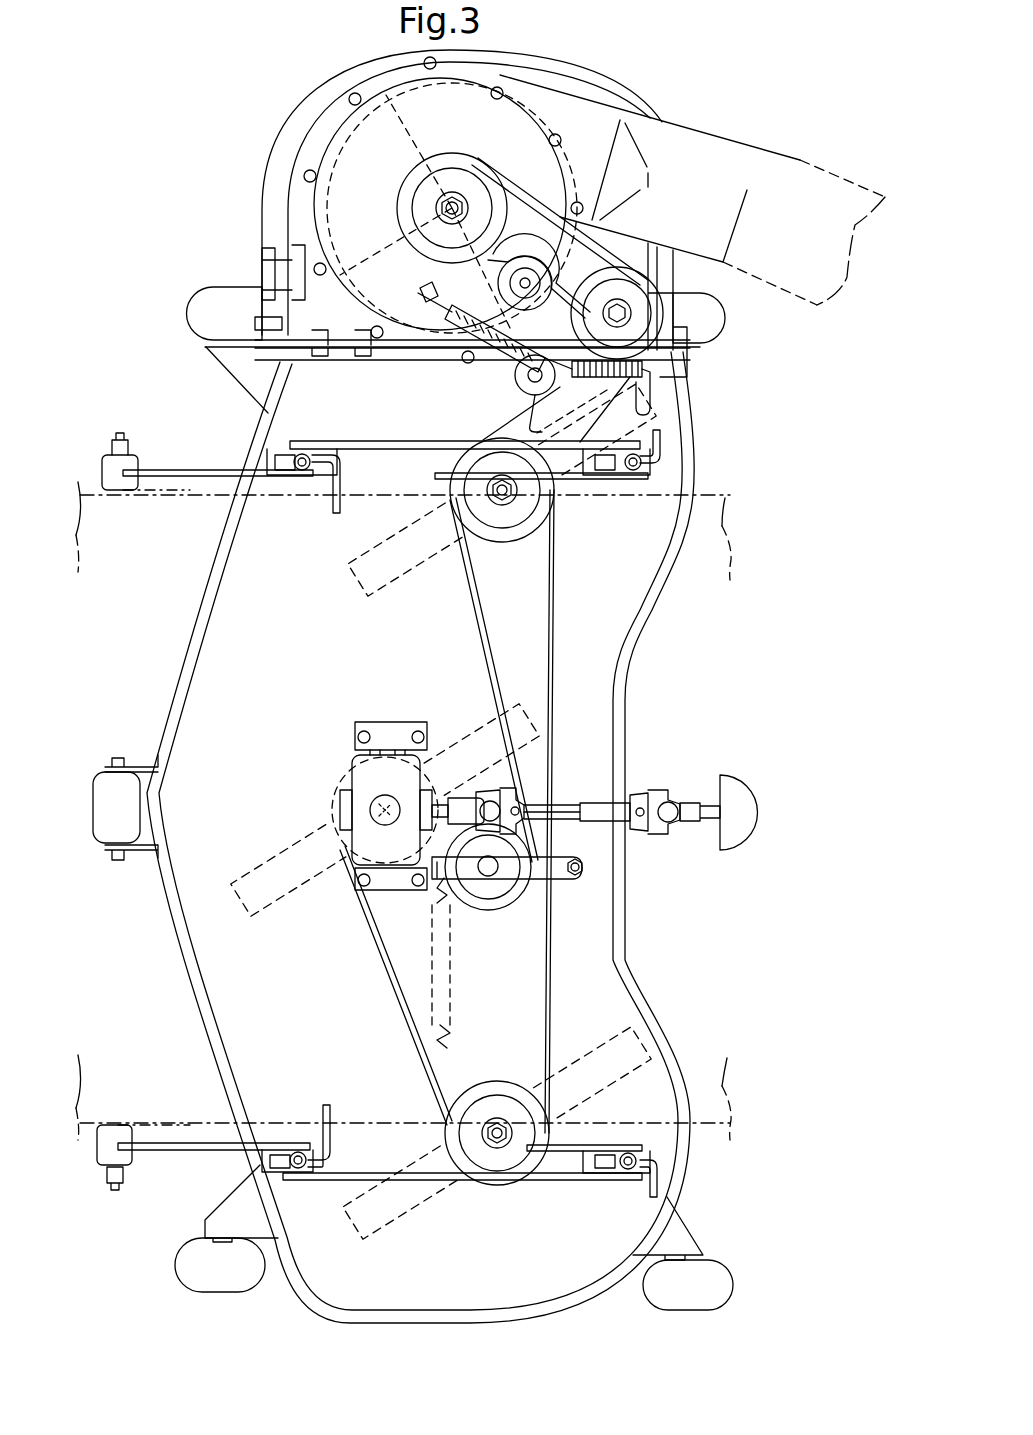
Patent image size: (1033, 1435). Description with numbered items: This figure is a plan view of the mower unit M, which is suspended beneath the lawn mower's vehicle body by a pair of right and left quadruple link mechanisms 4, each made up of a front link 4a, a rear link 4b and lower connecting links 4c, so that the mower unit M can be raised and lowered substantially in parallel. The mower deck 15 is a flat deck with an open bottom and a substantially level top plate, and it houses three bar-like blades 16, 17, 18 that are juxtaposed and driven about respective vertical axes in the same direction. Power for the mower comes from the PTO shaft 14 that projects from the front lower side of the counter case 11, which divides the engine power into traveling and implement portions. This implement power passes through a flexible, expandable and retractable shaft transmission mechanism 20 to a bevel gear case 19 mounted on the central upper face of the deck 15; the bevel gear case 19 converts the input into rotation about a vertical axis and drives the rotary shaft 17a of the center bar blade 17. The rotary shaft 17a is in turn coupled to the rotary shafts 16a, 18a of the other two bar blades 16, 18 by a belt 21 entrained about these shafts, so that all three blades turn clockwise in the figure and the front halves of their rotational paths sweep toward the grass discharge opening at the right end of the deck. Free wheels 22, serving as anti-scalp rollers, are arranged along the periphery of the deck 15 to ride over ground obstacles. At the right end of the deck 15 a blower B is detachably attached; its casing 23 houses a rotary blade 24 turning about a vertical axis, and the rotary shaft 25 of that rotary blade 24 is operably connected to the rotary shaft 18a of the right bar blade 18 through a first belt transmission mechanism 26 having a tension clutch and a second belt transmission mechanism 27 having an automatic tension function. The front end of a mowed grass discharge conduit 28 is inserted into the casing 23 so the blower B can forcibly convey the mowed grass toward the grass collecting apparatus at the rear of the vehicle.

The mower unit M is at (182, 940).
The blower B is at (280, 163).
The quadruple link mechanism 4 is at (355, 438).
The front link 4a is at (240, 468).
The rear link 4b is at (580, 480).
The lower connecting link 4c is at (375, 457).
The counter case 11 is at (738, 822).
The PTO shaft 14 is at (714, 818).
The mower deck 15 is at (196, 667).
The bar blade 16 is at (430, 1215).
The rotary shaft 16a is at (499, 1125).
The center bar blade 17 is at (283, 905).
The rotary shaft 17a is at (330, 805).
The right bar blade 18 is at (362, 583).
The rotary shaft 18a is at (502, 500).
The bevel gear case 19 is at (362, 775).
The shaft transmission mechanism 20 is at (580, 805).
The belt 21 is at (490, 680).
The free wheel 22 is at (195, 317).
The casing 23 is at (343, 130).
The rotary blade 24 is at (300, 222).
The rotary shaft 25 is at (452, 203).
The first belt transmission mechanism 26 is at (615, 413).
The second belt transmission mechanism 27 is at (550, 198).
The mowed grass discharge conduit 28 is at (812, 182).